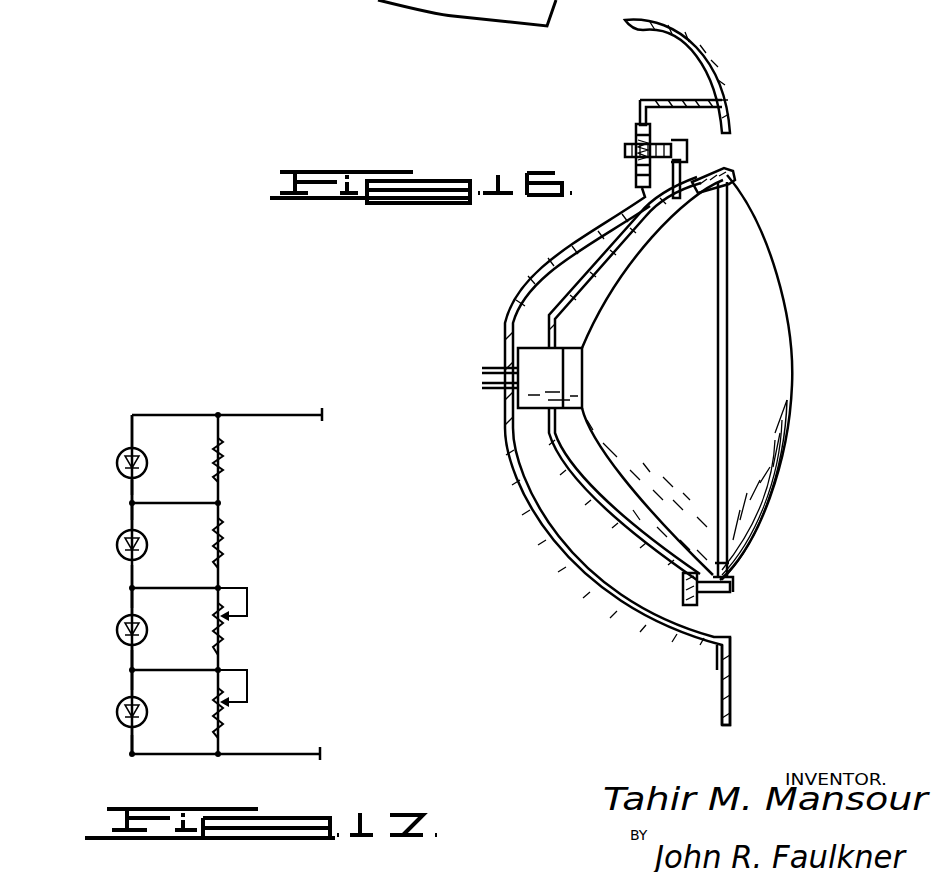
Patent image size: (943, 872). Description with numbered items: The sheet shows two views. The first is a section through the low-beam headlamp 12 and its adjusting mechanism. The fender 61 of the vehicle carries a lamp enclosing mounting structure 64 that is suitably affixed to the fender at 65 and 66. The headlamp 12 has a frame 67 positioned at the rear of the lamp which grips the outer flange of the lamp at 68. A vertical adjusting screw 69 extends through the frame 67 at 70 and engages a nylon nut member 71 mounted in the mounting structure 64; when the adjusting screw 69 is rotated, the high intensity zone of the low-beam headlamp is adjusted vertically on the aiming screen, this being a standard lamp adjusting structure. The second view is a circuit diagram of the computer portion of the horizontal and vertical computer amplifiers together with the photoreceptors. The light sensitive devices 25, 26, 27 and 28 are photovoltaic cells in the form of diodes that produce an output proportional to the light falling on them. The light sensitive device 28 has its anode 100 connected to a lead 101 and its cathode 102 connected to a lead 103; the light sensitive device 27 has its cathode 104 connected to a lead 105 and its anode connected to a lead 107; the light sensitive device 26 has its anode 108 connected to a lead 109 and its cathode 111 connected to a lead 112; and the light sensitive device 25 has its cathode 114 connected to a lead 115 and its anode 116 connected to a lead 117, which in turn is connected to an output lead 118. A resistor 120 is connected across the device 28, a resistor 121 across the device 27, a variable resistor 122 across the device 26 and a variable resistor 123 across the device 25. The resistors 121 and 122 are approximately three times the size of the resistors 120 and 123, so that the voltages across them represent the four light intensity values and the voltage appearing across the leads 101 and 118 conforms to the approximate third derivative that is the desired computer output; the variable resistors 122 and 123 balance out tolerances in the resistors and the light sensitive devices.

In FIG. 16, the low-beam headlamp 12 is at (790, 318).
In FIG. 16, the fender 61 is at (690, 36).
In FIG. 16, the lamp enclosing mounting structure 64 is at (547, 249).
In FIG. 16, the affixing point 65 is at (730, 128).
In FIG. 16, the affixing point 66 is at (735, 665).
In FIG. 16, the frame 67 is at (578, 487).
In FIG. 16, the outer flange gripping point 68 is at (735, 174).
In FIG. 16, the vertical adjusting screw 69 is at (635, 150).
In FIG. 16, the screw passage through frame 70 is at (681, 177).
In FIG. 16, the nylon nut member 71 is at (640, 155).
In FIG. 17, the light sensitive device 25 is at (127, 727).
In FIG. 17, the light sensitive device 26 is at (128, 618).
In FIG. 17, the light sensitive device 27 is at (128, 532).
In FIG. 17, the light sensitive device 28 is at (119, 455).
In FIG. 17, the anode 100 is at (140, 456).
In FIG. 17, the lead 101 is at (263, 414).
In FIG. 17, the cathode 102 is at (142, 468).
In FIG. 17, the lead 103 is at (130, 484).
In FIG. 17, the cathode 104 is at (140, 541).
In FIG. 17, the lead 105 is at (130, 504).
In FIG. 17, the lead 107 is at (130, 576).
In FIG. 17, the anode 108 is at (140, 625).
In FIG. 17, the lead 109 is at (130, 602).
In FIG. 17, the cathode 111 is at (142, 635).
In FIG. 17, the lead 112 is at (130, 660).
In FIG. 17, the cathode 114 is at (140, 709).
In FIG. 17, the lead 115 is at (130, 685).
In FIG. 17, the anode 116 is at (140, 718).
In FIG. 17, the lead 117 is at (128, 745).
In FIG. 17, the output lead 118 is at (246, 758).
In FIG. 17, the resistor 120 is at (222, 468).
In FIG. 17, the resistor 121 is at (222, 536).
In FIG. 17, the variable resistor 122 is at (222, 648).
In FIG. 17, the variable resistor 123 is at (222, 732).